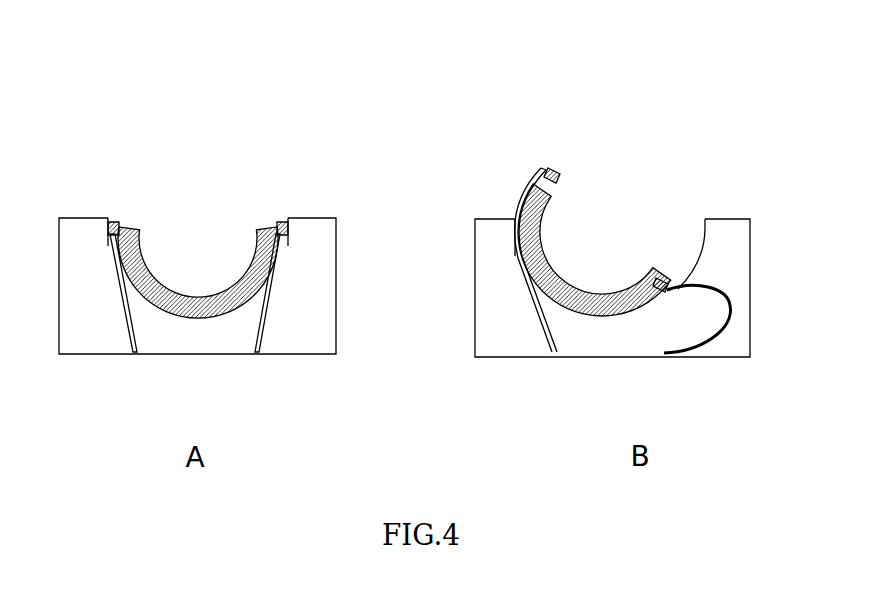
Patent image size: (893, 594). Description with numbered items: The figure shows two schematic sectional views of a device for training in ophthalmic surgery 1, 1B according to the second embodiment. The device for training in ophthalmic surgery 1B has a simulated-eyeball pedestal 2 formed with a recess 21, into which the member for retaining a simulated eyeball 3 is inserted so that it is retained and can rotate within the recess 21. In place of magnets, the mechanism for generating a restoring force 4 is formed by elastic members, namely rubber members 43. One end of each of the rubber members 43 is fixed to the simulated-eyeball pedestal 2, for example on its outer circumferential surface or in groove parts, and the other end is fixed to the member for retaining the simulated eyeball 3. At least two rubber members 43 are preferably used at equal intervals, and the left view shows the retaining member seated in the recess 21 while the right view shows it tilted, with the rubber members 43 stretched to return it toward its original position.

The device for training in ophthalmic surgery 1 is at (178, 100).
The device for training in ophthalmic surgery 1B is at (411, 245).
The simulated-eyeball pedestal 2 is at (325, 272).
The recess 21 is at (212, 243).
The member for retaining a simulated eyeball 3 is at (148, 268).
The mechanism for generating a restoring force 4 is at (411, 292).
The rubber members 43 is at (388, 230).